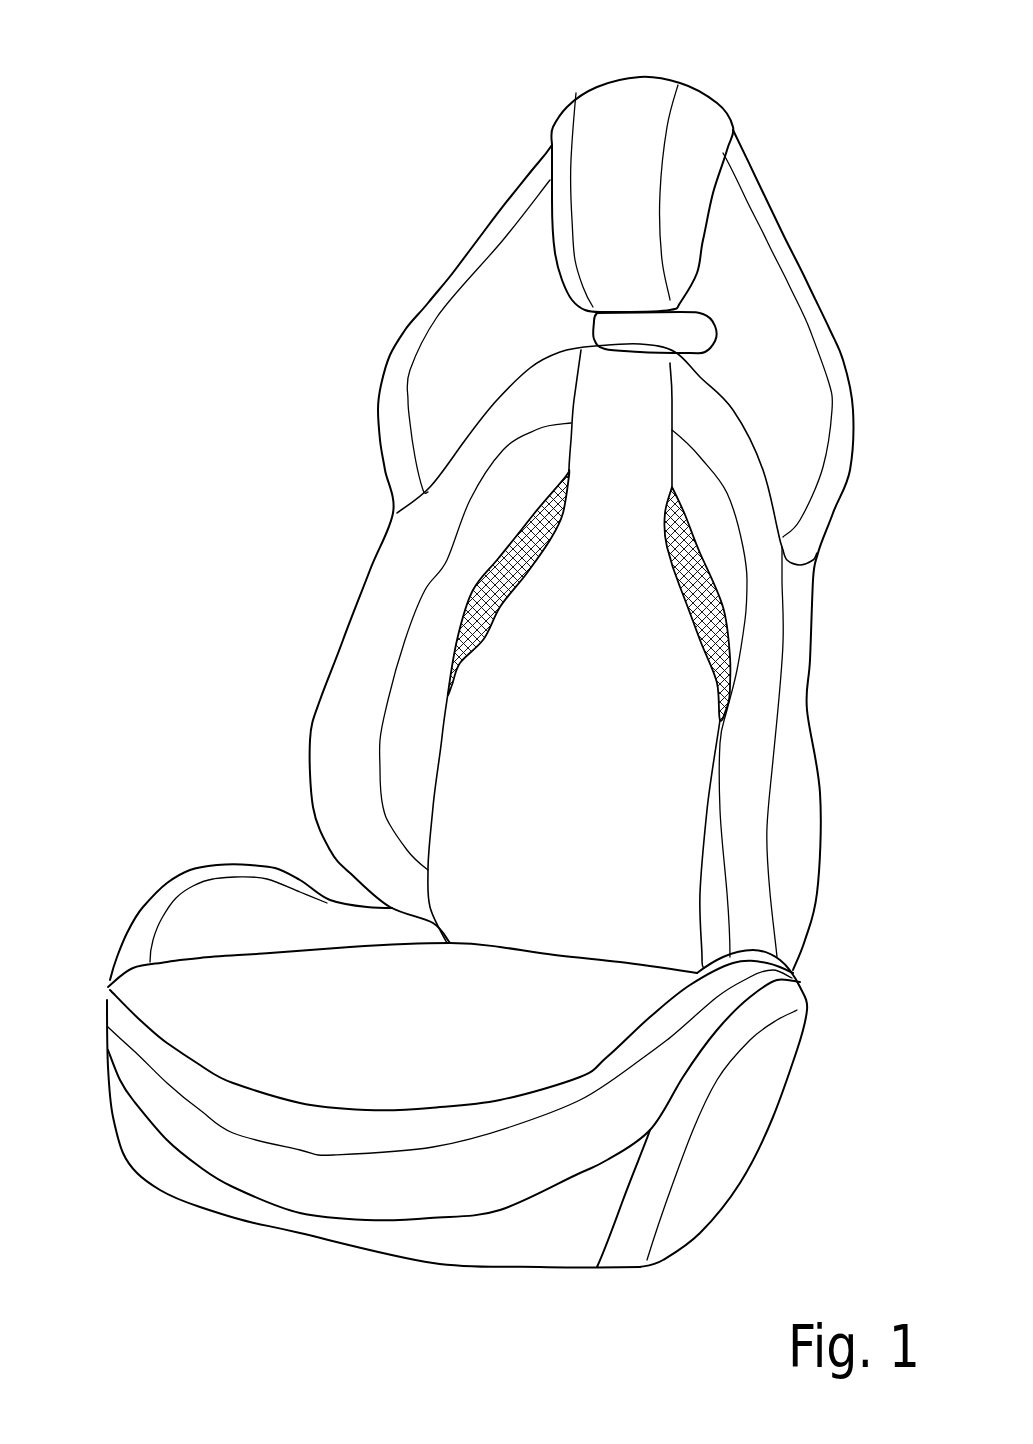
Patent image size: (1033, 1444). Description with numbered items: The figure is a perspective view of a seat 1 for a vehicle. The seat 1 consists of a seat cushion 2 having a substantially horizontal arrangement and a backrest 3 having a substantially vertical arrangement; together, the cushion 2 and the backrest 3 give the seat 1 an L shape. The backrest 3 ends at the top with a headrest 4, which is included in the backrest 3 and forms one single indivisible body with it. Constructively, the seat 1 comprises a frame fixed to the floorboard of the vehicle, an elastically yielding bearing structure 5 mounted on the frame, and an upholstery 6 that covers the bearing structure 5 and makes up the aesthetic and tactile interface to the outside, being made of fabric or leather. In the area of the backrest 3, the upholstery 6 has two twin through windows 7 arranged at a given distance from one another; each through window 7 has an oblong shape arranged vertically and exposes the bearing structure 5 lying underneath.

The seat 1 is at (120, 117).
The seat cushion 2 is at (146, 1225).
The backrest 3 is at (272, 702).
The headrest 4 is at (500, 115).
The bearing structure 5 is at (497, 590).
The upholstery 6 is at (620, 803).
The through window 7 is at (547, 539).